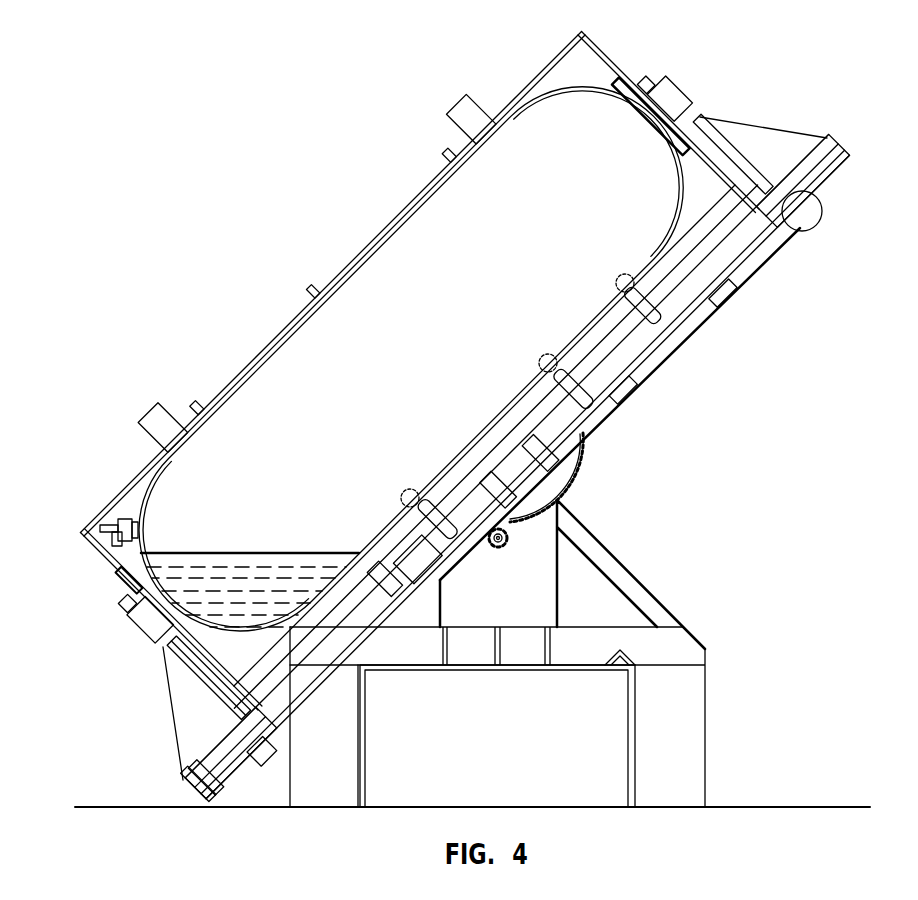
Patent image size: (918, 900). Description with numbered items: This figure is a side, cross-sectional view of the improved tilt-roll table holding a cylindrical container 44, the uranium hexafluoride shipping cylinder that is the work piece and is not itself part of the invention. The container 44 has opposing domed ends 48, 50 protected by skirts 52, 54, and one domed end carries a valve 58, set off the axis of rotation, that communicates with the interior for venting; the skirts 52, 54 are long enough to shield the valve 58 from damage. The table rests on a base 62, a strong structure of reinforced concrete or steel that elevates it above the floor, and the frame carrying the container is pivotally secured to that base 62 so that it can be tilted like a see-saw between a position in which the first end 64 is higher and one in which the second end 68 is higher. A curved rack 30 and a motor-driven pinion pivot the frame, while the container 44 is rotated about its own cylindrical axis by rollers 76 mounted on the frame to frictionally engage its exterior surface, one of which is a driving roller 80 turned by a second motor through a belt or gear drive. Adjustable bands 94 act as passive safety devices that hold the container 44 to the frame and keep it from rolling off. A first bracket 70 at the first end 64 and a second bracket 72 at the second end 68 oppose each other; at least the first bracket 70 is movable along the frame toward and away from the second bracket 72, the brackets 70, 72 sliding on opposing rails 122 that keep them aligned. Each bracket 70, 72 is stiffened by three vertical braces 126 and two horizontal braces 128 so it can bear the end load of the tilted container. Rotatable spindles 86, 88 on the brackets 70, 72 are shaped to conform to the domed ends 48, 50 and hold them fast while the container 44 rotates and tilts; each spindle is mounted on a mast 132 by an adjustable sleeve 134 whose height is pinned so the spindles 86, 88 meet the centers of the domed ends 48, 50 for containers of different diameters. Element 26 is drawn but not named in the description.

The support frame 26 is at (510, 547).
The curved rack 30 is at (582, 472).
The cylindrical container 44 is at (226, 357).
The domed end 48 is at (137, 552).
The domed end 50 is at (580, 83).
The skirt 52 is at (106, 528).
The skirt 54 is at (574, 45).
The valve 58 is at (119, 519).
The base 62 is at (680, 616).
The first end 64 is at (332, 688).
The second end 68 is at (733, 287).
The first bracket 70 is at (182, 688).
The second bracket 72 is at (768, 152).
The rollers 76 is at (643, 327).
The driving roller 80 is at (460, 563).
The spindle 86 is at (128, 580).
The spindle 88 is at (628, 98).
The adjustable bands 94 is at (467, 113).
The rails 122 is at (223, 788).
The vertical braces 126 is at (725, 147).
The horizontal braces 128 is at (813, 150).
The mast 132 is at (675, 93).
The adjustable sleeve 134 is at (150, 633).